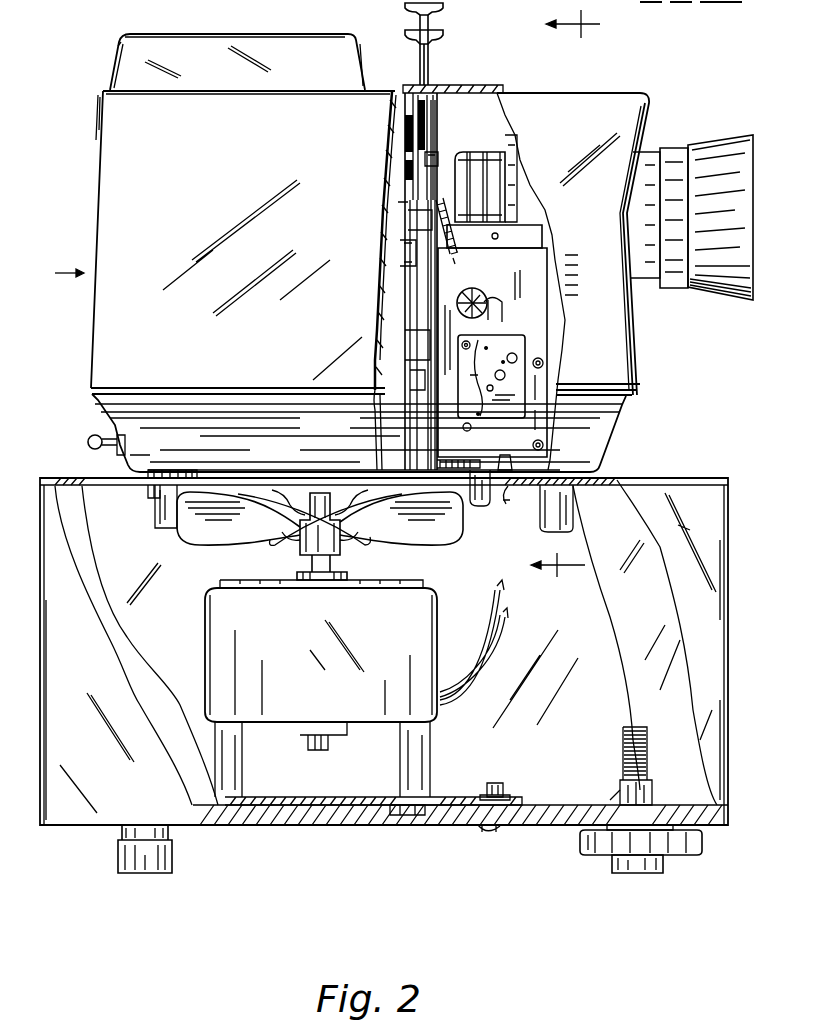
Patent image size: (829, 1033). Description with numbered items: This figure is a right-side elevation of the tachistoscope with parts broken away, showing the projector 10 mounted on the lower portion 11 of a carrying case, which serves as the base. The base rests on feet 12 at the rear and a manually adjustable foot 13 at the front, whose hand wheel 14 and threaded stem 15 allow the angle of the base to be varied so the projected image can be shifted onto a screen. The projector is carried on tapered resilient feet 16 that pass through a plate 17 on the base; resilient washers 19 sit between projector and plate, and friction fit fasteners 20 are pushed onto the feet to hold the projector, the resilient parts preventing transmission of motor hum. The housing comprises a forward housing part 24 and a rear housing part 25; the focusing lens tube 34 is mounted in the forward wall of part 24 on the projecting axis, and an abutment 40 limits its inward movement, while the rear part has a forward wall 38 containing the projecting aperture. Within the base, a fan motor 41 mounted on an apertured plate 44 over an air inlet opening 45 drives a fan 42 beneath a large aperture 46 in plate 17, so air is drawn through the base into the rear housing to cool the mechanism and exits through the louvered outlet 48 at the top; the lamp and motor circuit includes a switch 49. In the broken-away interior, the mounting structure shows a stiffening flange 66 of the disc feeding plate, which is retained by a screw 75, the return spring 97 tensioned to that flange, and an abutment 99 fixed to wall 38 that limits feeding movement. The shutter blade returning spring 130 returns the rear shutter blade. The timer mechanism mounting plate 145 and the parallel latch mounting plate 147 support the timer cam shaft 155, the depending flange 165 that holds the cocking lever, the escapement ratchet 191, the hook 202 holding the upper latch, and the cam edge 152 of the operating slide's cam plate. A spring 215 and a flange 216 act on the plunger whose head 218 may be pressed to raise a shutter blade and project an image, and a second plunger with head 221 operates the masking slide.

The projector 10 is at (326, 296).
The lower portion of carrying case 11 is at (707, 660).
The feet 12 is at (147, 870).
The manually adjustable foot 13 is at (633, 870).
The hand wheel 14 is at (581, 846).
The threaded stem 15 is at (624, 763).
The tapered resilient feet 16 is at (163, 510).
The plate 17 is at (115, 487).
The resilient washers 19 is at (186, 472).
The friction fit fasteners 20 is at (153, 489).
The forward housing part 24 is at (582, 118).
The rear housing part 25 is at (178, 212).
The focusing lens tube 34 is at (727, 158).
The forward wall 38 is at (390, 228).
The abutment 40 is at (486, 190).
The fan motor 41 is at (227, 650).
The fan 42 is at (217, 532).
The apertured plate 44 is at (443, 798).
The air inlet opening 45 is at (497, 822).
The large aperture 46 is at (506, 504).
The louvered outlet 48 is at (138, 69).
The switch 49 is at (118, 450).
The stiffening flange 66 is at (417, 258).
The screw 75 is at (440, 373).
The spring 97 is at (422, 279).
The abutment 99 is at (392, 305).
The shutter blade returning spring 130 is at (422, 445).
The timer mechanism mounting plate 145 is at (533, 280).
The latch mounting plate 147 is at (530, 233).
The cam edge 152 is at (488, 504).
The timer cam shaft 155 is at (468, 339).
The depending flange 165 is at (455, 467).
The escapement ratchet 191 is at (498, 341).
The hook 202 is at (483, 307).
The spring 215 is at (452, 245).
The flange 216 is at (435, 157).
The head 218 is at (443, 40).
The head 221 is at (443, 9).